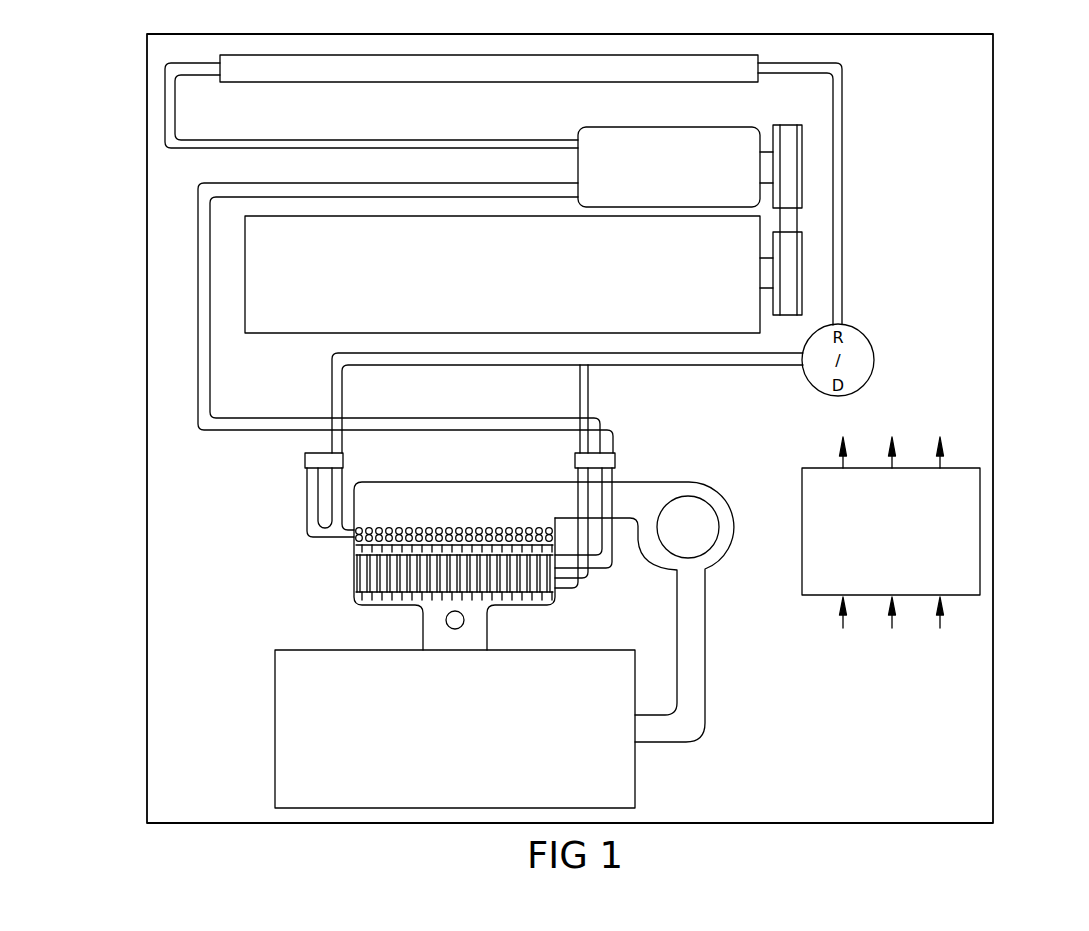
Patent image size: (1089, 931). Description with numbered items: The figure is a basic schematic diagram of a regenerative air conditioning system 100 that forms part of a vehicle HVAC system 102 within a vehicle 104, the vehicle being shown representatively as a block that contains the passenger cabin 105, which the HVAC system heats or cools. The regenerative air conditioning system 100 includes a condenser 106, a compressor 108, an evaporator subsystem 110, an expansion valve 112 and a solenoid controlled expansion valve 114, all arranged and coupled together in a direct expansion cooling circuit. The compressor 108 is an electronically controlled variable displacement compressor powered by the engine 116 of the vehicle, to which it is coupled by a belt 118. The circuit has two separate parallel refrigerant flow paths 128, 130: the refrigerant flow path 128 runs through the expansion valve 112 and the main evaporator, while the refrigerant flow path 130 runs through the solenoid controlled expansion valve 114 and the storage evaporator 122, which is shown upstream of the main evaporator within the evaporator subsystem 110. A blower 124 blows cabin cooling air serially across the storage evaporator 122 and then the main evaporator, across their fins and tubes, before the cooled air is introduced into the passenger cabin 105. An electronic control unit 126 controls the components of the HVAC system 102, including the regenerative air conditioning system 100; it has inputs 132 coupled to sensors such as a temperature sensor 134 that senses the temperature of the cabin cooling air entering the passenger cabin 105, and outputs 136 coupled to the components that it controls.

The regenerative air conditioning system 100 is at (176, 293).
The vehicle HVAC system 102 is at (966, 347).
The vehicle 104 is at (993, 118).
The passenger cabin 105 is at (636, 780).
The condenser 106 is at (640, 82).
The compressor 108 is at (750, 127).
The evaporator subsystem 110 is at (316, 572).
The expansion valve 112 is at (615, 462).
The solenoid controlled expansion valve 114 is at (305, 462).
The engine 116 is at (300, 333).
The belt 118 is at (787, 273).
The storage evaporator 122 is at (392, 527).
The blower 124 is at (703, 496).
The electronic control unit (ECU) 126 is at (821, 596).
The refrigerant flow path 128 is at (610, 583).
The refrigerant flow path 130 is at (280, 520).
The inputs 132 is at (940, 624).
The temperature sensor 134 is at (465, 620).
The outputs 136 is at (845, 466).